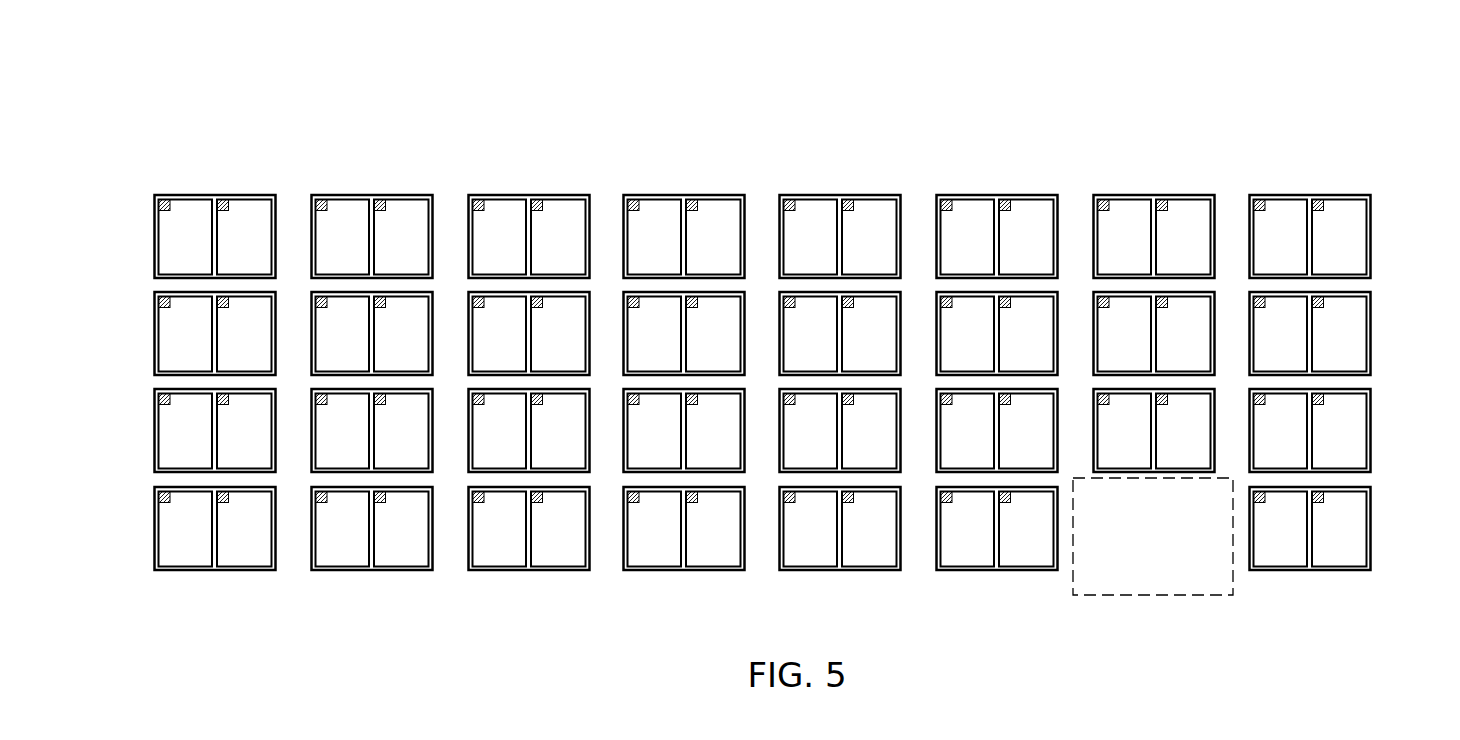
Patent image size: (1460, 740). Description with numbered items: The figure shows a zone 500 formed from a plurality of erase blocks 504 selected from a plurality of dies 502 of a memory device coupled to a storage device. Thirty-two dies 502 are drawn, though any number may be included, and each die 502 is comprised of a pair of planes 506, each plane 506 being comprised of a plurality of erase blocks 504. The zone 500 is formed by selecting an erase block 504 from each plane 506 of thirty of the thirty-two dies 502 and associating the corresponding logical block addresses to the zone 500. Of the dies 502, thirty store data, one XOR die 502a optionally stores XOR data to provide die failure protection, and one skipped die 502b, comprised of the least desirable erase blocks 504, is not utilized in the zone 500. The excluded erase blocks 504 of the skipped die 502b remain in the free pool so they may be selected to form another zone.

The zone 500 is at (258, 98).
The die 502 is at (766, 376).
The XOR die 502a is at (1318, 572).
The skipped die 502b is at (1225, 588).
The erase block 504 is at (168, 193).
The plane 506 is at (1358, 250).